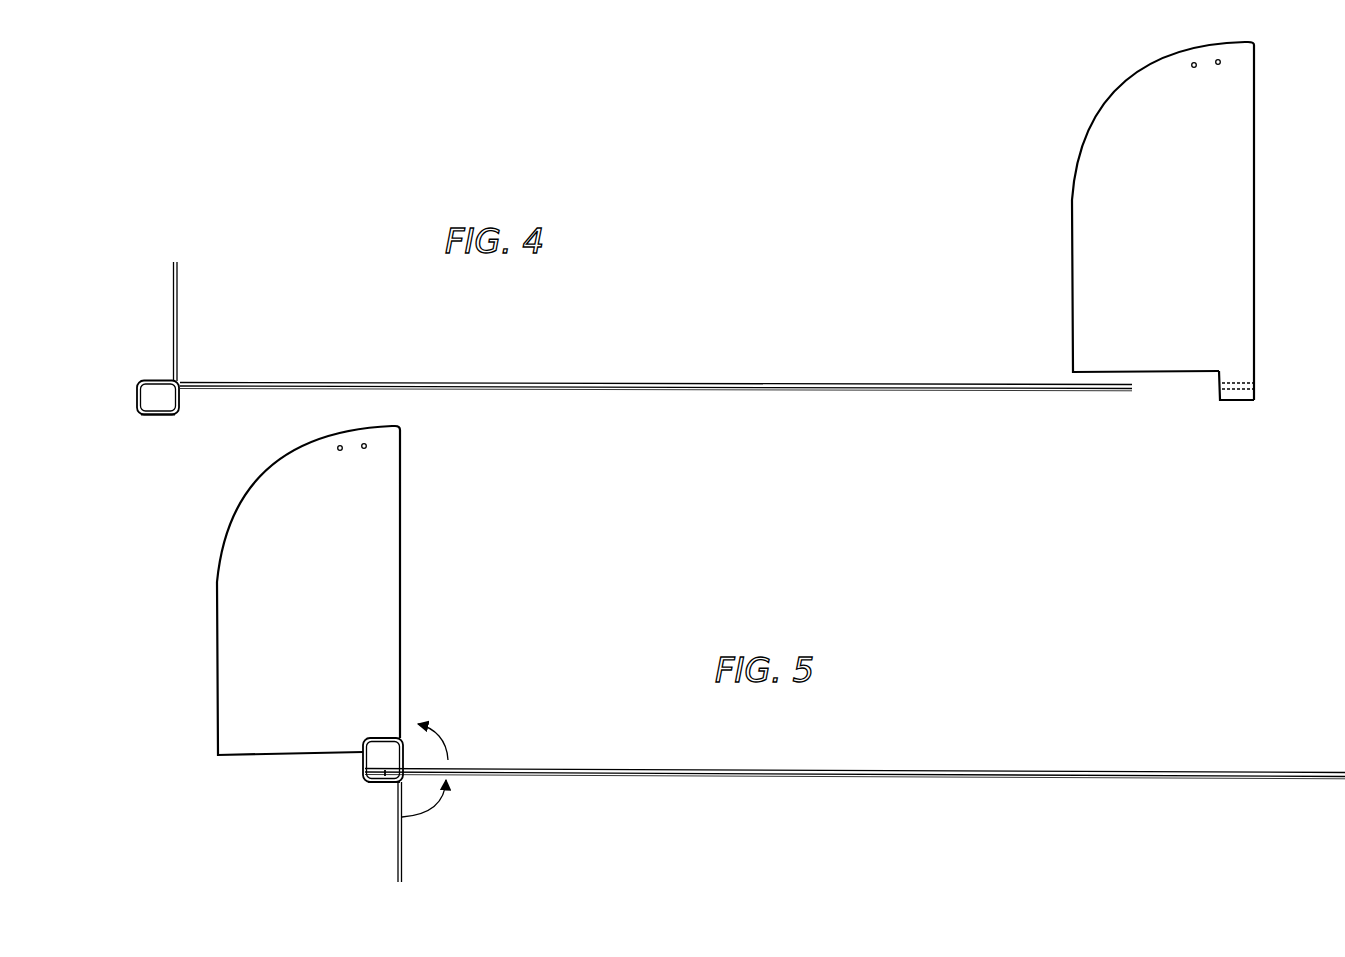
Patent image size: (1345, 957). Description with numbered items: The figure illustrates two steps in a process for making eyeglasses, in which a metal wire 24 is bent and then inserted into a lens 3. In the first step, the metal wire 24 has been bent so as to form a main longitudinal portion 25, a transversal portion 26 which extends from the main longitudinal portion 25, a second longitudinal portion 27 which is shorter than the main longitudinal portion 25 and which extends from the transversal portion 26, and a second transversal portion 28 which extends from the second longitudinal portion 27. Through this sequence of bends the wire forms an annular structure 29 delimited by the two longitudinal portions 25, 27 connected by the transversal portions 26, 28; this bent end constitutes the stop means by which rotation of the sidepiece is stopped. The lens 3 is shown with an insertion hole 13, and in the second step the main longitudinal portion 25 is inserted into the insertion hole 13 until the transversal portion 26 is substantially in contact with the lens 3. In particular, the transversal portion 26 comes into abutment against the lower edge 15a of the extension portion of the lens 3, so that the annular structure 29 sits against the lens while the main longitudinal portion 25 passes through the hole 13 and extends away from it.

In FIG. 4, the lens 3 is at (1176, 242).
In FIG. 5, the lens 3 is at (319, 620).
In FIG. 4, the insertion hole 13 is at (1240, 384).
In FIG. 5, the insertion hole 13 is at (385, 776).
In FIG. 5, the lower edge 15a is at (367, 779).
In FIG. 4, the metal wire 24 is at (713, 356).
In FIG. 5, the metal wire 24 is at (1029, 746).
In FIG. 4, the main longitudinal portion 25 is at (782, 389).
In FIG. 5, the main longitudinal portion 25 is at (1098, 777).
In FIG. 4, the transversal portion 26 is at (137, 396).
In FIG. 5, the transversal portion 26 is at (362, 760).
In FIG. 4, the second longitudinal portion 27 is at (152, 417).
In FIG. 4, the second transversal portion 28 is at (177, 292).
In FIG. 5, the second transversal portion 28 is at (402, 860).
In FIG. 4, the annular structure 29 is at (146, 356).
In FIG. 5, the annular structure 29 is at (386, 721).